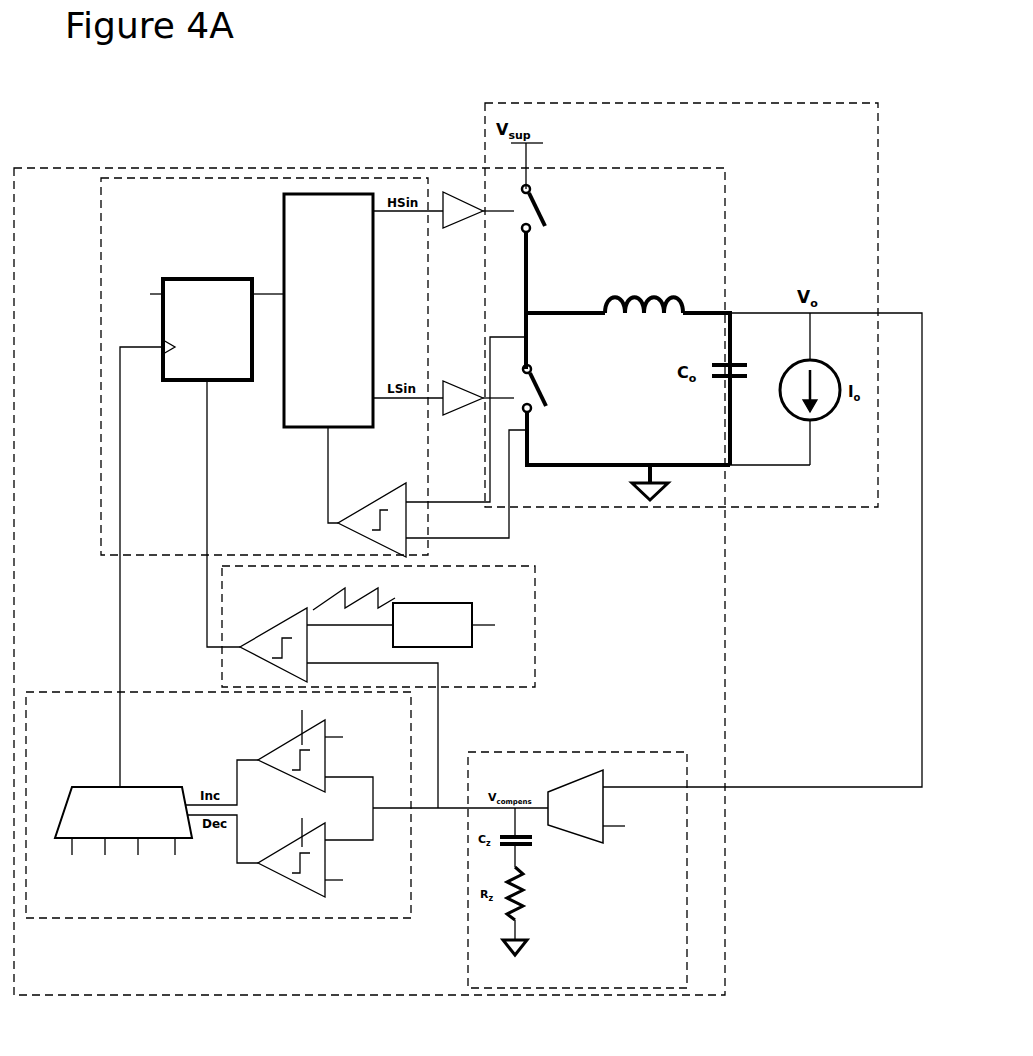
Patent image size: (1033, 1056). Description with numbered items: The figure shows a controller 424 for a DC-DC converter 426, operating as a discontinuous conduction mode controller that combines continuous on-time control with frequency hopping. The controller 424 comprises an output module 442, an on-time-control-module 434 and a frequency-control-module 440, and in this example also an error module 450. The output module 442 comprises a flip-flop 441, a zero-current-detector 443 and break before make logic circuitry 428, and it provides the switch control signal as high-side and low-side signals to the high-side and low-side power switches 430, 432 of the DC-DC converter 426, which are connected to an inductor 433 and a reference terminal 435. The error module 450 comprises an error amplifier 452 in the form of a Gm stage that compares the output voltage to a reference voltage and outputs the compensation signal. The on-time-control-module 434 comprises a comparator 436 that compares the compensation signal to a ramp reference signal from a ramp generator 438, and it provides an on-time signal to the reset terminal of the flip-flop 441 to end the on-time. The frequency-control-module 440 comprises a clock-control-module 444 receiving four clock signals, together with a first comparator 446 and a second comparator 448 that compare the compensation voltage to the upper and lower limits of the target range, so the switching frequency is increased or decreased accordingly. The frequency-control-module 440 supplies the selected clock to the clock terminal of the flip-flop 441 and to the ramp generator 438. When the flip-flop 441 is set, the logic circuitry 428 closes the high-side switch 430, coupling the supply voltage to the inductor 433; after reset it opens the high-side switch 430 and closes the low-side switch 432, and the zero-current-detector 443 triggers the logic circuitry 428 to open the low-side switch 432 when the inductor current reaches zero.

The controller 424 is at (50, 168).
The DC-DC converter 426 is at (720, 103).
The break before make (BBM) logic circuitry 428 is at (328, 194).
The high-side power switch 430 is at (545, 198).
The low-side power switch 432 is at (540, 412).
The inductor 433 is at (685, 298).
The on-time-control-module 434 is at (222, 660).
The reference terminal 435 is at (668, 490).
The comparator 436 is at (272, 628).
The ramp generator 438 is at (450, 647).
The frequency-control-module 440 is at (47, 692).
The flip-flop 441 is at (205, 279).
The output module 442 is at (185, 178).
The zero-current-detector (ZCD) 443 is at (380, 495).
The clock-control-module 444 is at (75, 787).
The first comparator 446 is at (290, 740).
The second comparator 448 is at (290, 880).
The error module 450 is at (652, 752).
The error amplifier 452 is at (585, 843).